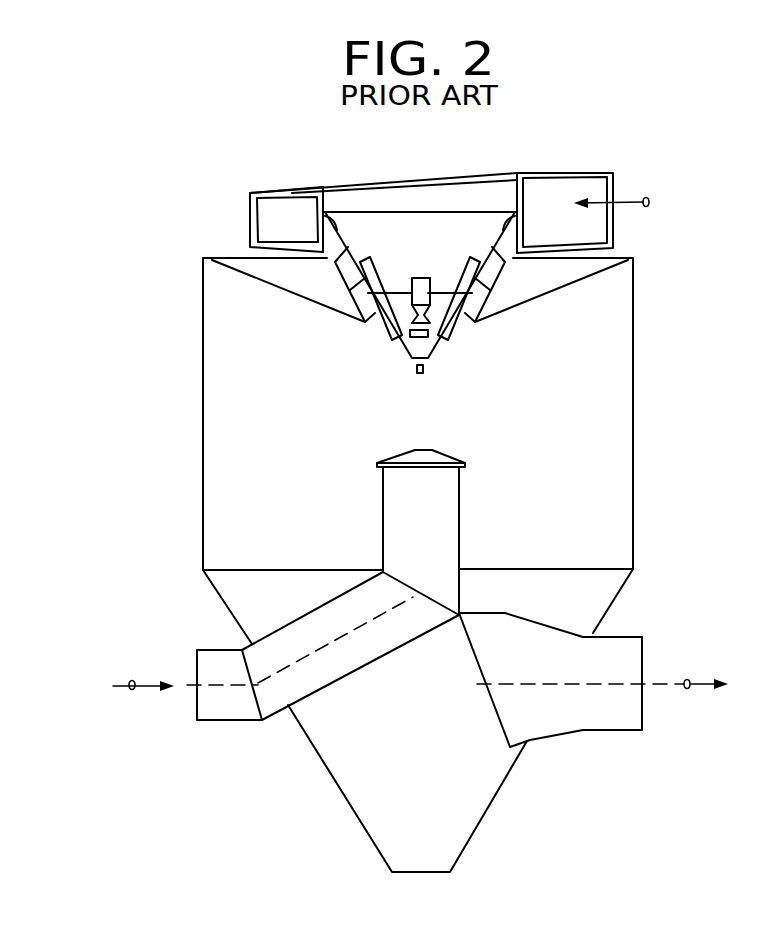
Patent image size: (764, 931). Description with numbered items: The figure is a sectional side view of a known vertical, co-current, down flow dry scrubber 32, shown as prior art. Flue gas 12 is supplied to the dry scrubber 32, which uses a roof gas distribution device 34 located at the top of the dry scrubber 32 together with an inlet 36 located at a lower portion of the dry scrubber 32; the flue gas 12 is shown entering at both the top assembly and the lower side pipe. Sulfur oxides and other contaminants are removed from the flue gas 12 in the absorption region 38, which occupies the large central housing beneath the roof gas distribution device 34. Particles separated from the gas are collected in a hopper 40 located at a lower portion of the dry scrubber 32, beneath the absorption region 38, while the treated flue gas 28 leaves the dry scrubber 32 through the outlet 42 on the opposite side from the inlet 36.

The dry scrubber 32 is at (366, 160).
The roof gas distribution device 34 is at (482, 184).
The flue gas 12 is at (647, 197).
The absorption region 38 is at (570, 427).
The inlet 36 is at (215, 660).
The outlet 42 is at (662, 652).
The treated flue gas 28 is at (687, 689).
The hopper 40 is at (465, 815).